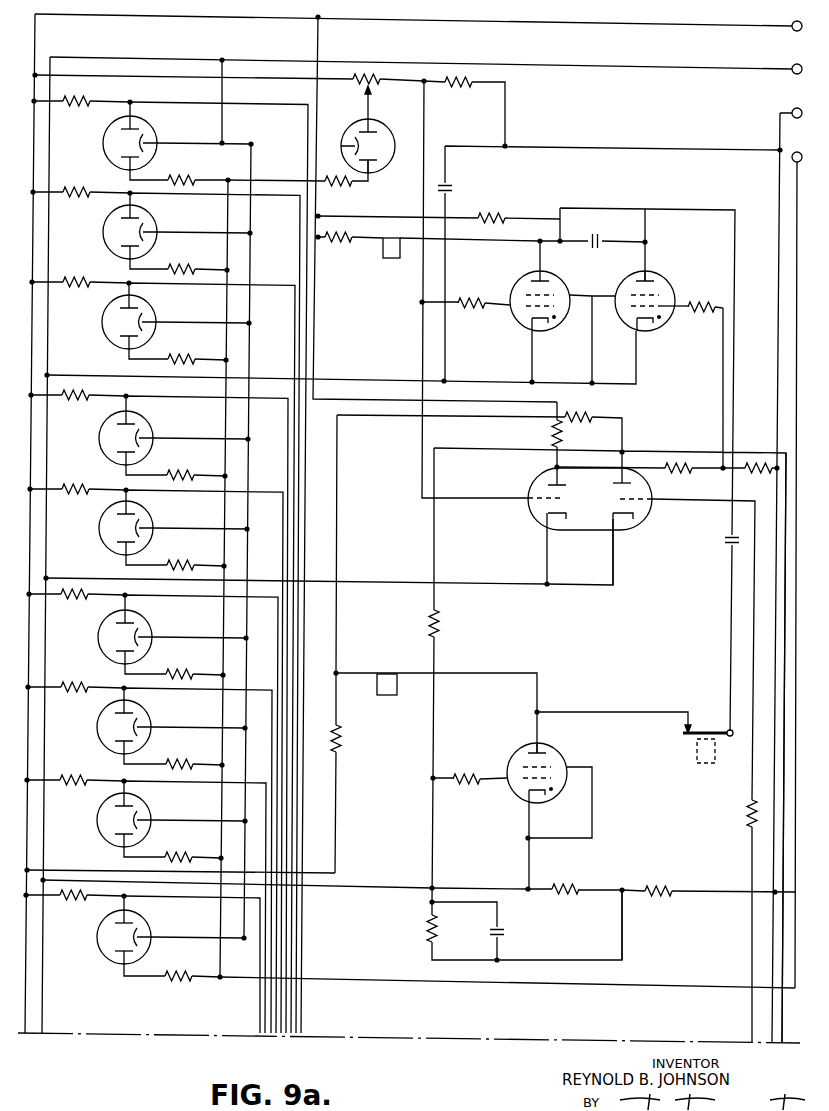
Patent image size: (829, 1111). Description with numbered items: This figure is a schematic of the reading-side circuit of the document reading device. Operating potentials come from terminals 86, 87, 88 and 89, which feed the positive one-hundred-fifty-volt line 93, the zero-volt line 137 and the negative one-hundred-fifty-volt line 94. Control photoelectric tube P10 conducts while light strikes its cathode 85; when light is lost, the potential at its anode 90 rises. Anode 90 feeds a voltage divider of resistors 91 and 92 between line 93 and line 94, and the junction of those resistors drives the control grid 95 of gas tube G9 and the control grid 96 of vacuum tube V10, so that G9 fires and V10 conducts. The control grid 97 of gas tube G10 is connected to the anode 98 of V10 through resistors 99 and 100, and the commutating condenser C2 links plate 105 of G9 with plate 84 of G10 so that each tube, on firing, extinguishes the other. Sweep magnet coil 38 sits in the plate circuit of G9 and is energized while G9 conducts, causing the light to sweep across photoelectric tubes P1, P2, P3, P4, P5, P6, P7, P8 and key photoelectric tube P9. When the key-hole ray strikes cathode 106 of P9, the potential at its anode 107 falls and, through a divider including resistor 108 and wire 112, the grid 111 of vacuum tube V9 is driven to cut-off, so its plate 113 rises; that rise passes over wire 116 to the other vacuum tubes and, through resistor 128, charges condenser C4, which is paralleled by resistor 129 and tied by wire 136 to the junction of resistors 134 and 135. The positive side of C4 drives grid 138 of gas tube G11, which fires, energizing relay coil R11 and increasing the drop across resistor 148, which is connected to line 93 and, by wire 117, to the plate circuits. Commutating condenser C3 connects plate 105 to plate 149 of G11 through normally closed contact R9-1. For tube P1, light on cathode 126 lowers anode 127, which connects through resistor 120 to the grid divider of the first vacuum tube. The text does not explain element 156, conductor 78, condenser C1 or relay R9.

The photoelectric tube P1 is at (409, 961).
The photoelectric tube P2 is at (151, 812).
The photoelectric tube P3 is at (151, 719).
The photoelectric tube P4 is at (152, 626).
The photoelectric tube P5 is at (153, 532).
The photoelectric tube P6 is at (153, 442).
The photoelectric tube P7 is at (156, 316).
The photoelectric tube P8 is at (157, 226).
The key photoelectric tube P9 is at (199, 558).
The control photoelectric tube P10 is at (362, 141).
The resistor 108 is at (92, 101).
The anode 107 is at (121, 129).
The control electrode 156 is at (150, 151).
The cathode 106 is at (122, 165).
The resistor 120 is at (76, 901).
The anode 127 is at (115, 935).
The cathode 126 is at (133, 958).
The anode 90 is at (355, 128).
The resistor 91 is at (385, 88).
The cathode 85 is at (377, 170).
The conductor 78 is at (424, 132).
The resistor 92 is at (466, 83).
The zero volt line 137 is at (565, 67).
The +150 volt line 93 is at (606, 24).
The terminal 86 is at (791, 29).
The terminal 87 is at (791, 70).
The terminal 88 is at (796, 107).
The terminal 89 is at (797, 151).
The −150 volt line 94 is at (780, 212).
The capacitor C1 is at (453, 189).
The sweep magnet coil 38 is at (383, 256).
The commutating condenser C2 is at (600, 243).
The gas tube G9 is at (505, 290).
The plate 105 is at (548, 279).
The control grid 95 is at (516, 311).
The plate 84 is at (655, 278).
The control grid 97 is at (672, 306).
The resistor 99 is at (695, 306).
The gas tube G10 is at (667, 299).
The resistor 100 is at (683, 462).
The anode 98 is at (548, 478).
The control grid 96 is at (532, 497).
The vacuum tube V10 is at (562, 493).
The plate 113 is at (640, 482).
The grid 111 is at (641, 503).
The vacuum tube V9 is at (654, 533).
The commutating condenser C3 is at (726, 548).
The wire 117 is at (336, 652).
The resistor 128 is at (439, 634).
The relay coil R11 is at (395, 692).
The resistor 148 is at (341, 746).
The plate 149 is at (512, 755).
The gas tube G11 is at (526, 775).
The grid 138 is at (522, 784).
The normally closed contact R9-1 is at (683, 733).
The relay coil R9 is at (697, 753).
The resistor 134 is at (568, 885).
The resistor 135 is at (655, 885).
The resistor 129 is at (425, 928).
The condenser C4 is at (505, 933).
The wire 136 is at (622, 950).
The wire 112 is at (752, 944).
The wire 116 is at (783, 1028).